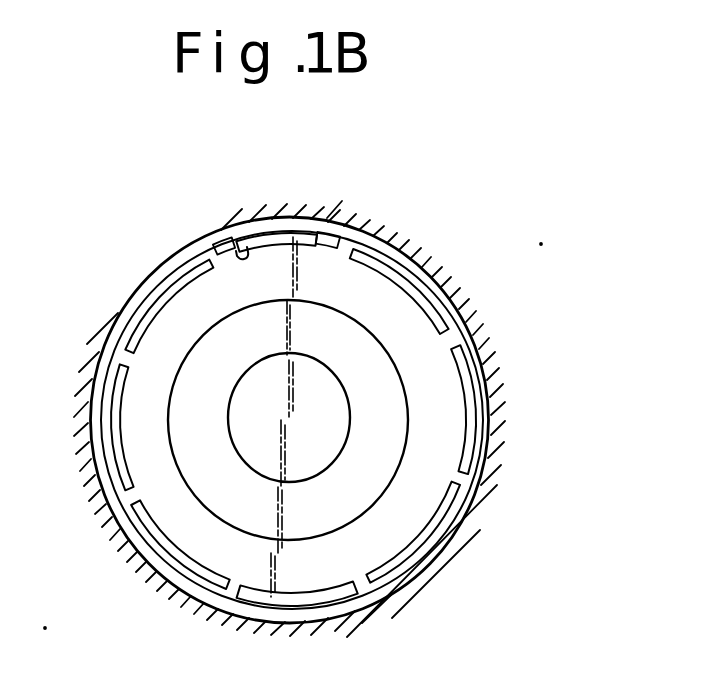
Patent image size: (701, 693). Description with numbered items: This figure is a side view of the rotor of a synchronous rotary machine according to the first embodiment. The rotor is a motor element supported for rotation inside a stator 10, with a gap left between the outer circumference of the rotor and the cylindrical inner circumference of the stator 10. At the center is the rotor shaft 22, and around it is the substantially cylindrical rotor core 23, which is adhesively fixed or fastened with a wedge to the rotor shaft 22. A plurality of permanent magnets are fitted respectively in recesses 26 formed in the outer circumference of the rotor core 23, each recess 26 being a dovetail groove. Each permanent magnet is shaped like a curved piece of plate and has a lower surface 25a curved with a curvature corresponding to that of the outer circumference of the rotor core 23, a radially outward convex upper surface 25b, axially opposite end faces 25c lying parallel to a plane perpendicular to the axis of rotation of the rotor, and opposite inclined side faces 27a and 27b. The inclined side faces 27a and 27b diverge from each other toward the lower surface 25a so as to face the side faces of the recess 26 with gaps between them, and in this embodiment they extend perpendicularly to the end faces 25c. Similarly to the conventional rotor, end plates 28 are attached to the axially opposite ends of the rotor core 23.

The stator 10 is at (420, 250).
The rotor shaft 22 is at (272, 462).
The rotor core 23 is at (403, 525).
The lower surface 25a is at (227, 240).
The engaging tab 25b is at (318, 232).
The end faces 25c is at (236, 251).
The recess 26 is at (330, 232).
The inclined side face 27a is at (178, 240).
The inclined side face 27b is at (353, 227).
The end plates 28 is at (381, 360).